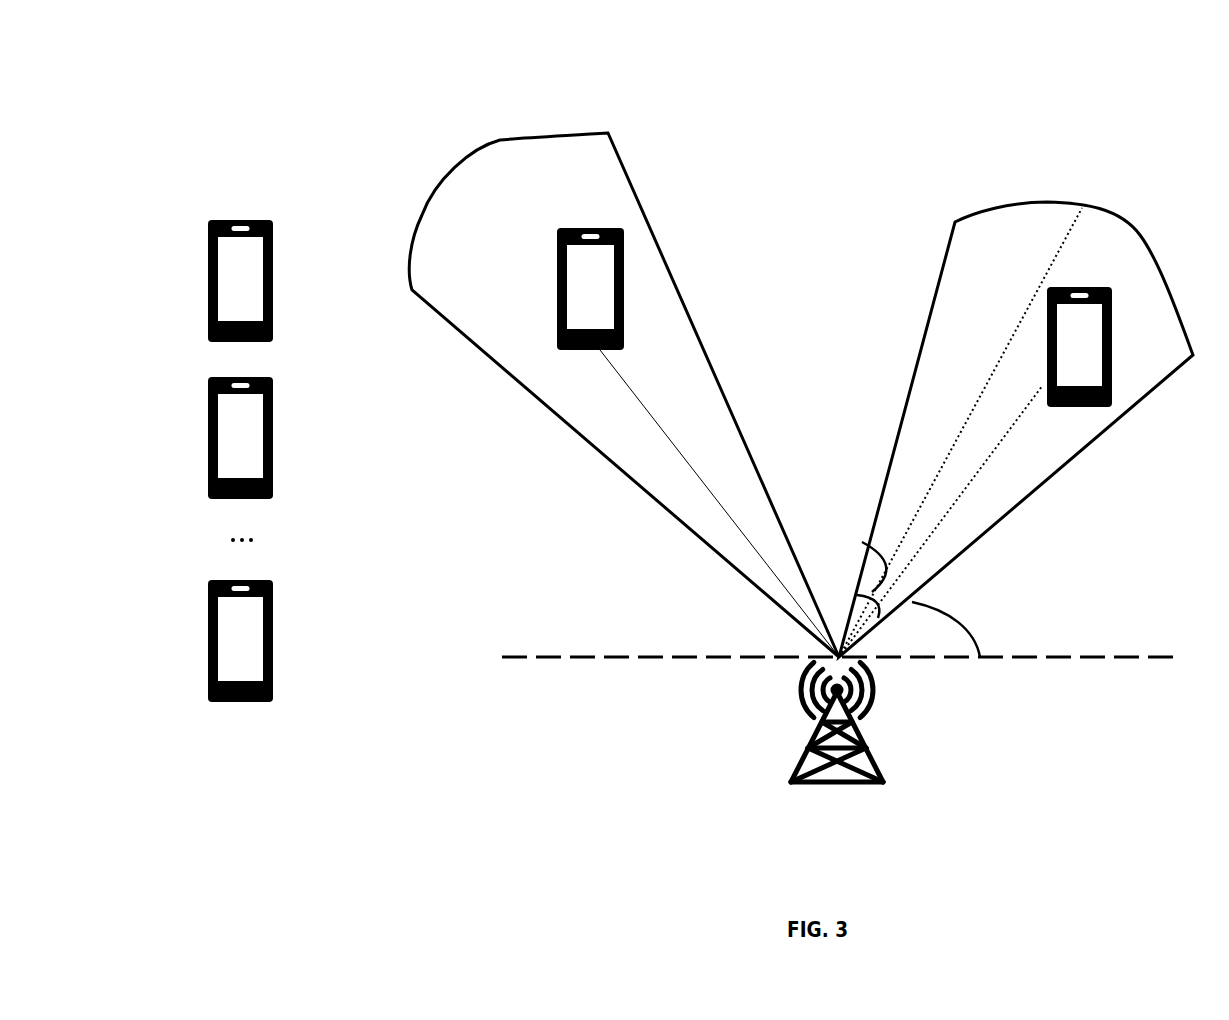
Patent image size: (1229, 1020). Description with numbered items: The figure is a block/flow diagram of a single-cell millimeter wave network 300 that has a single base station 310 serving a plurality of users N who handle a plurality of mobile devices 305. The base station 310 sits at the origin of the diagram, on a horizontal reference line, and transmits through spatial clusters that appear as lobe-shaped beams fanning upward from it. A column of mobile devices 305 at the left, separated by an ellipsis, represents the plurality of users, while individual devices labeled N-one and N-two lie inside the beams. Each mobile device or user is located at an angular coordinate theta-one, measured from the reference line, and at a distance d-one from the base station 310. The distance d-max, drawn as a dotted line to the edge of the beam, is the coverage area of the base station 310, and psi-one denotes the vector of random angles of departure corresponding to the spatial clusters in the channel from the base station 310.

The single-cell millimeter wave (mmWave) network 300 is at (824, 39).
The mobile devices 305 is at (226, 200).
The base station 310 is at (926, 760).